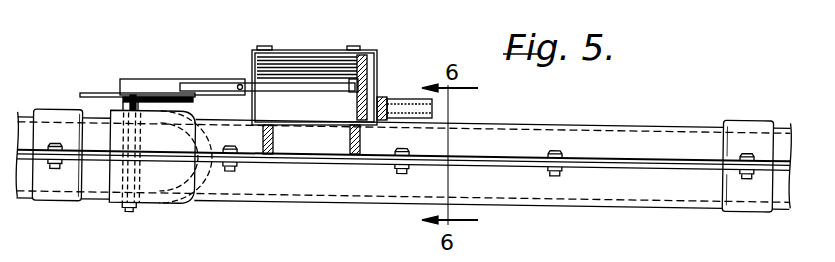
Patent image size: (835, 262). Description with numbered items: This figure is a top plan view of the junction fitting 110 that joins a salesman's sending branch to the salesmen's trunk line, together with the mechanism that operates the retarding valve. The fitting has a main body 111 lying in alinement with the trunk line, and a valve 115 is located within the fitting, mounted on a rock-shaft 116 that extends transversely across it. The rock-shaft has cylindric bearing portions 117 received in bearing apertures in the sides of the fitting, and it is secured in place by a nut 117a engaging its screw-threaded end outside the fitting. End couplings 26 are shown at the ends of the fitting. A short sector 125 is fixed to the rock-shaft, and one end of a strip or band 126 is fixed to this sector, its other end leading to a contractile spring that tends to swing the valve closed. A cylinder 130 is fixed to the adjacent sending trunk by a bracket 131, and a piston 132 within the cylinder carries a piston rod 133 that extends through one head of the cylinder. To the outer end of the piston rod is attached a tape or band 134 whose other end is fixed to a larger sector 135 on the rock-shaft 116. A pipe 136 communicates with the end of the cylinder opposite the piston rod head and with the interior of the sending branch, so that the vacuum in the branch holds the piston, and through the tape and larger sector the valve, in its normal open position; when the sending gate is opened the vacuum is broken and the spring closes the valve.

The end coupling 26 is at (23, 112).
The junction fitting 110 is at (78, 205).
The main body 111 is at (382, 188).
The valve 115 is at (166, 194).
The rock-shaft 116 is at (127, 172).
The cylindric bearing portion 117 is at (123, 123).
The nut 117a is at (132, 207).
The short sector 125 is at (174, 97).
The strip or band 126 is at (95, 93).
The cylinder 130 is at (304, 50).
The bracket 131 is at (272, 150).
The piston 132 is at (356, 60).
The piston rod 133 is at (290, 80).
The tape or band 134 is at (215, 83).
The larger sector 135 is at (133, 79).
The pipe 136 is at (398, 101).